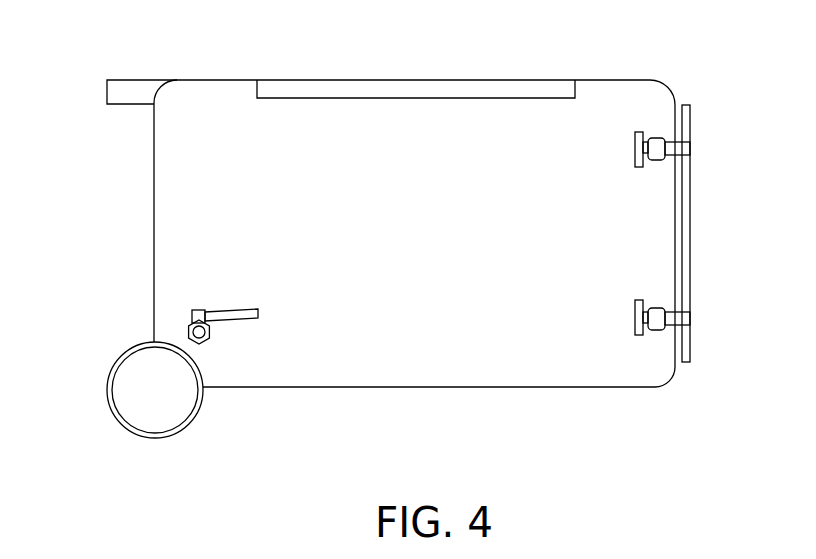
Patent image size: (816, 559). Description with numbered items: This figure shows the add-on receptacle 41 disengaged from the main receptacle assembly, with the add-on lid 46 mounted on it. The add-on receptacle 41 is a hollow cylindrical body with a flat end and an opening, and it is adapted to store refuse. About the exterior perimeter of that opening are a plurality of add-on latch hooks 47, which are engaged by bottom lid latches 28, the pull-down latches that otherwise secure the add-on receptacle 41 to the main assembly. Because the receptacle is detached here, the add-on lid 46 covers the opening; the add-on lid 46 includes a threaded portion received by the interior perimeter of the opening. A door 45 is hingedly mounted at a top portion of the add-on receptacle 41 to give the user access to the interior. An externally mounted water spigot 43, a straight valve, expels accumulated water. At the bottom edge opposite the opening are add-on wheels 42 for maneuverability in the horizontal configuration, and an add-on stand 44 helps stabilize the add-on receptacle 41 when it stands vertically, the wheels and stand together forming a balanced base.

The bottom lid latch 28 is at (688, 150).
The add-on receptacle 41 is at (409, 362).
The add-on wheels 42 is at (148, 438).
The water spigot 43 is at (200, 345).
The add-on stand 44 is at (132, 90).
The door 45 is at (426, 86).
The add-on lid 46 is at (690, 219).
The add-on latch hook 47 is at (638, 148).